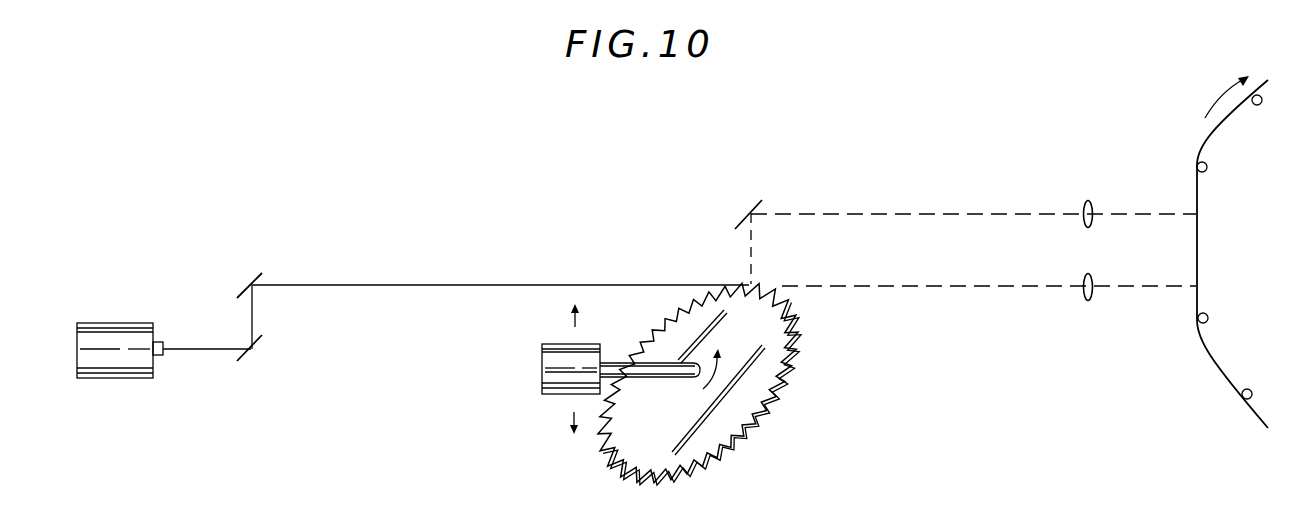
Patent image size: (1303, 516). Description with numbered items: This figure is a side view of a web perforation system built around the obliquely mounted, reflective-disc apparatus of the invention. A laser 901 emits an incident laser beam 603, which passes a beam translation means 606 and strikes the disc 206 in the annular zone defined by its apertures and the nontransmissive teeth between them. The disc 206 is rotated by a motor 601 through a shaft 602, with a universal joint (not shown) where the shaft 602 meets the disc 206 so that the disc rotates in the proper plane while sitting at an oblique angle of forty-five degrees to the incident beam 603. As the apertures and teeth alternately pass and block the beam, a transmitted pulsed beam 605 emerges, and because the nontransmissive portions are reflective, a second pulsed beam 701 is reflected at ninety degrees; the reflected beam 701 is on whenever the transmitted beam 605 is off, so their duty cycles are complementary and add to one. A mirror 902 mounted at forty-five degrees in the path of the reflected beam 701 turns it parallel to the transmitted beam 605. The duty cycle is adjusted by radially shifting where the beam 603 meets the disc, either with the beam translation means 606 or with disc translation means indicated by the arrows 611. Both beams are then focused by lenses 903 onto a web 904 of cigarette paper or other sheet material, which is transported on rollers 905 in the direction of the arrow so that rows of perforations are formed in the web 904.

The laser 901 is at (107, 373).
The beam translation means 606 is at (230, 291).
The laser beam 603 is at (414, 284).
The mirror 902 is at (757, 200).
The reflected beam 701 is at (750, 254).
The transmitted beam 605 is at (992, 284).
The lenses 903 is at (1085, 205).
The web 904 is at (1198, 258).
The rollers 905 is at (1260, 105).
The motor 601 is at (541, 380).
The shaft 602 is at (622, 364).
The disc translation means 611 is at (568, 321).
The disc 206 is at (735, 441).